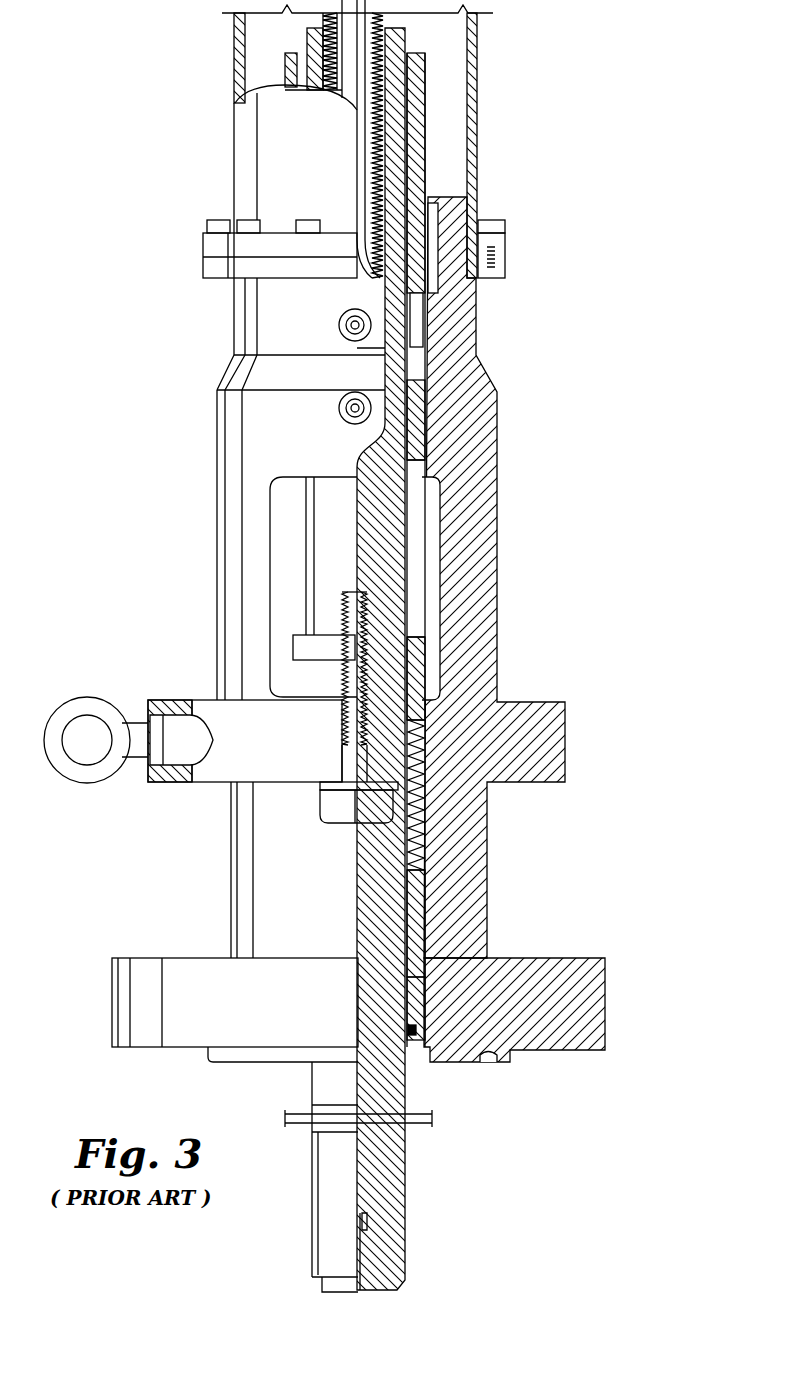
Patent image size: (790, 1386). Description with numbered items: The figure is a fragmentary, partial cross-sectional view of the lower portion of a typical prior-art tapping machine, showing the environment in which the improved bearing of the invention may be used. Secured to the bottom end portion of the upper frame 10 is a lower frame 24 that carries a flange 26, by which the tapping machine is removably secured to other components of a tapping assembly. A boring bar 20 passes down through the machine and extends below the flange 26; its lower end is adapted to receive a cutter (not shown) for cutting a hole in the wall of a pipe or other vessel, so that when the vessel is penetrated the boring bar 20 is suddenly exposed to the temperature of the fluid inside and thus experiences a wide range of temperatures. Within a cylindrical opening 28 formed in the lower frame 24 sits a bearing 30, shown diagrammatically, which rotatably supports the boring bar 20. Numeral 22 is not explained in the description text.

The upper frame 10 is at (478, 148).
The boring bar 20 is at (397, 182).
The threaded rod 22 is at (380, 117).
The lower frame 24 is at (482, 408).
The flange 26 is at (588, 1025).
The cylindrical opening 28 is at (418, 910).
The bearing 30 is at (487, 858).